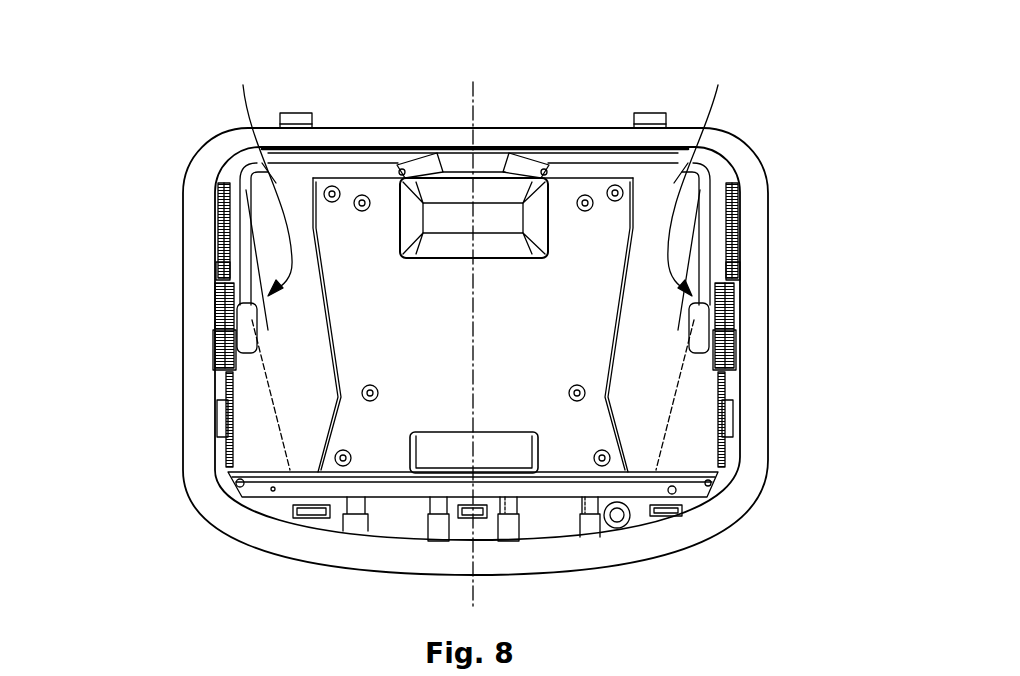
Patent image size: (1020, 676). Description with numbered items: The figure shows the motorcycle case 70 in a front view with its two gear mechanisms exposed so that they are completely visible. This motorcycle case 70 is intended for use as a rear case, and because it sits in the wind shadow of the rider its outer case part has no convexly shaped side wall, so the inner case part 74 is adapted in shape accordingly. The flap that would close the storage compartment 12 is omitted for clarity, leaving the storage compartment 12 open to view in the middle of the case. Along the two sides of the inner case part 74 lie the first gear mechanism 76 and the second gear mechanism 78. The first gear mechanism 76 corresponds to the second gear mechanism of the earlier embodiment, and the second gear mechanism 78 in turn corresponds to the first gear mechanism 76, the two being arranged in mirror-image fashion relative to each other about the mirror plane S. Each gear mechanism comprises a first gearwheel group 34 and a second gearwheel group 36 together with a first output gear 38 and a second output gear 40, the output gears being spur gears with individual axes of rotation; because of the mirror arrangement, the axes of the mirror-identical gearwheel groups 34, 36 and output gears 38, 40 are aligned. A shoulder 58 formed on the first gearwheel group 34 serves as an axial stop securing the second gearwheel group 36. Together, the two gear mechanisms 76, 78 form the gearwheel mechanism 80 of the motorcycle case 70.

The storage compartment 12 is at (298, 418).
The first gearwheel group 34 is at (224, 345).
The second gearwheel group 36 is at (220, 265).
The first output gear 38 is at (228, 447).
The second output gear 40 is at (220, 203).
The shoulder 58 is at (220, 295).
The motorcycle case 70 is at (183, 126).
The inner case part 74 is at (727, 156).
The first gear mechanism 76 is at (762, 512).
The second gear mechanism 78 is at (206, 540).
The gearwheel mechanism 80 is at (485, 175).
The mirror plane S is at (470, 84).